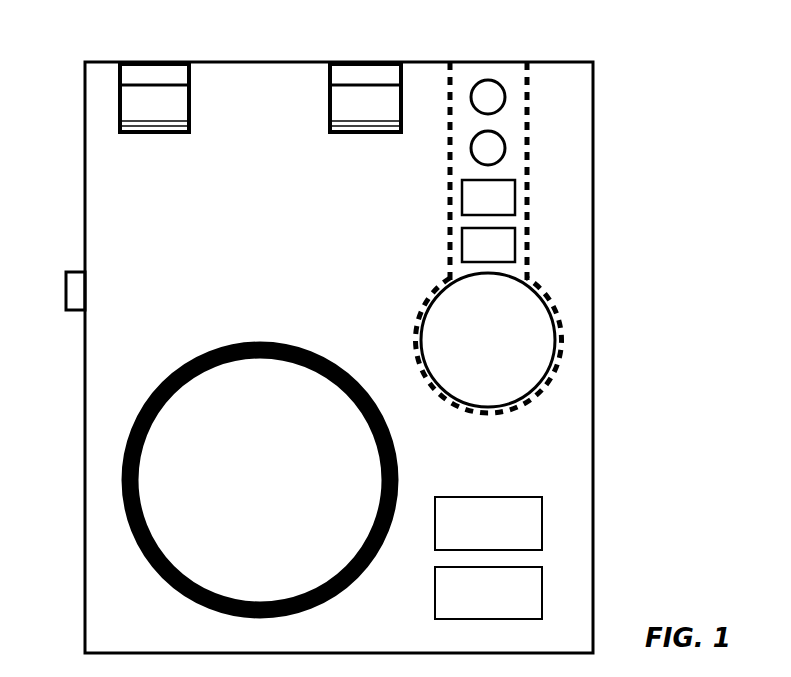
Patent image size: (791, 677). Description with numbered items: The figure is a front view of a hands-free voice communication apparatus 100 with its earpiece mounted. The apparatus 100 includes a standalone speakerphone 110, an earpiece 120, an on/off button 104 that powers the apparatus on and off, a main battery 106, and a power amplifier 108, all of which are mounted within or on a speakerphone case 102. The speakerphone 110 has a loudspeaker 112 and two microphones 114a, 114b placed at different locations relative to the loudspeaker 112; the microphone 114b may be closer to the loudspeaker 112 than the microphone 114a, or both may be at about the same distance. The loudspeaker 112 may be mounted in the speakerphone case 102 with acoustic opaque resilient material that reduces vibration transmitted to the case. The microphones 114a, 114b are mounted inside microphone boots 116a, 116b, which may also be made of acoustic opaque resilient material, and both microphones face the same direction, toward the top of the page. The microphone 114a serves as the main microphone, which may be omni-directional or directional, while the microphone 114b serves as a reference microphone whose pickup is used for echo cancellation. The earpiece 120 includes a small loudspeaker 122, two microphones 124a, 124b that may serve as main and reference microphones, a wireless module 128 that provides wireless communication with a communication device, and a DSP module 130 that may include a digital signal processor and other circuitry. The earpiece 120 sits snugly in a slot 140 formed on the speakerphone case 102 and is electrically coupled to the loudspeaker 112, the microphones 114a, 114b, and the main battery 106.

The hands-free voice communication apparatus 100 is at (80, 44).
The speakerphone case 102 is at (85, 486).
The on/off button 104 is at (66, 294).
The main battery 106 is at (542, 594).
The power amplifier 108 is at (542, 523).
The standalone speakerphone 110 is at (261, 296).
The loudspeaker 112 is at (260, 480).
The microphone 114a is at (186, 118).
The microphone 114b is at (335, 118).
The microphone boot 116a is at (155, 136).
The microphone boot 116b is at (365, 136).
The earpiece 120 is at (469, 218).
The small loudspeaker 122 is at (488, 340).
The microphone 124a is at (505, 97).
The microphone 124b is at (505, 148).
The wireless module 128 is at (515, 197).
The DSP module 130 is at (515, 245).
The slot 140 is at (412, 339).